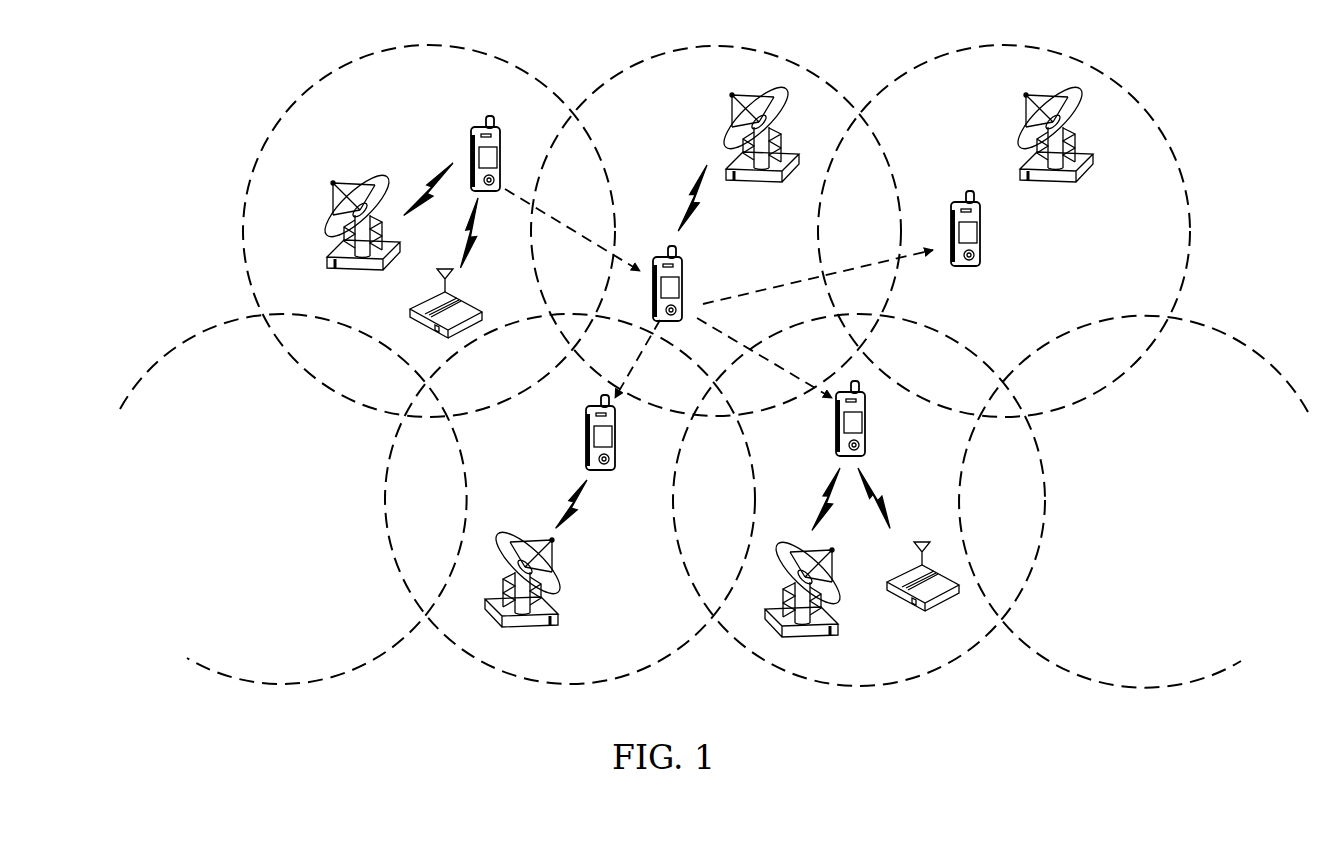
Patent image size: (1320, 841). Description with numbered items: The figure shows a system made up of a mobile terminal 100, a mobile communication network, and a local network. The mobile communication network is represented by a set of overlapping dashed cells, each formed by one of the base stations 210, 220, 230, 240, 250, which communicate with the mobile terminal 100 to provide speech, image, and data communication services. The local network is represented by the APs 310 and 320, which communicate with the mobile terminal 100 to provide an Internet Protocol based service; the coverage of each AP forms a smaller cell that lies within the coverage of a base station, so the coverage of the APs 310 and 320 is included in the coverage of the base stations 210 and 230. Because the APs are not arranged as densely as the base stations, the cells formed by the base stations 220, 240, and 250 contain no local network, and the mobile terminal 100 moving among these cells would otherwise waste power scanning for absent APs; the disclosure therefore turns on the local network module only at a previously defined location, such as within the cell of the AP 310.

The mobile terminal 100 is at (478, 133).
The base station 210 is at (375, 182).
The base station 220 is at (732, 120).
The base station 230 is at (820, 553).
The base station 240 is at (540, 545).
The base station 250 is at (1023, 122).
The AP 310 is at (478, 302).
The AP 320 is at (913, 602).